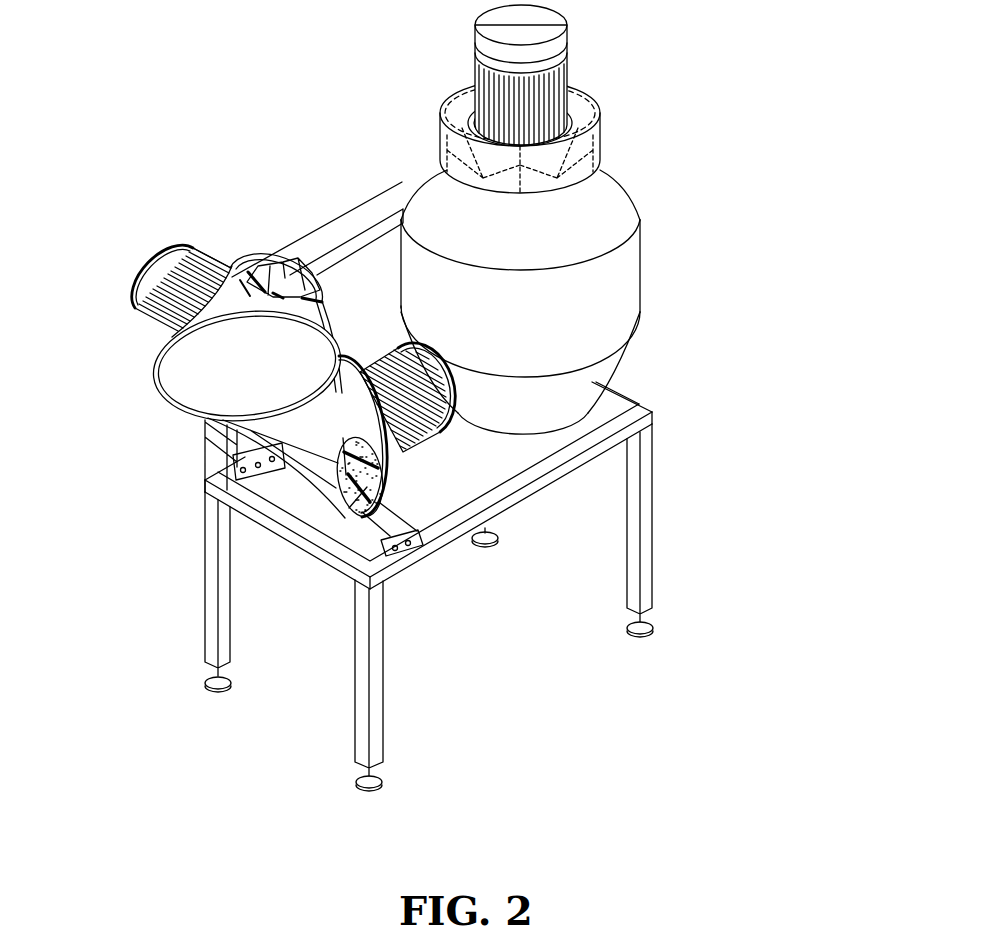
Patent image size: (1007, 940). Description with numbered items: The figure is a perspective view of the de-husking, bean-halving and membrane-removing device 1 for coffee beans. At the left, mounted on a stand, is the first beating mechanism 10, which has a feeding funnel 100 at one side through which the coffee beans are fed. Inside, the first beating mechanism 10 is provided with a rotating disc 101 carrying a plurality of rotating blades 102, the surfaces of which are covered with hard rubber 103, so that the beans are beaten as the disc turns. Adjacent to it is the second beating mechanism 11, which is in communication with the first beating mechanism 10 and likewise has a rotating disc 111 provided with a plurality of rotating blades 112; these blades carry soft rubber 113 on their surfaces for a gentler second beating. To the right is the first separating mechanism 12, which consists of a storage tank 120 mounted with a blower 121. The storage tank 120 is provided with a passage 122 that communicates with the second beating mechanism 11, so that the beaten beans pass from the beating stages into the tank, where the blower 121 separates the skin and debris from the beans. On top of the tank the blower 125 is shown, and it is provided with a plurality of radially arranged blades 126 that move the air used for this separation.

The de-husking, bean-halving and membrane-removing device 1 is at (815, 393).
The first beating mechanism 10 is at (315, 518).
The second beating mechanism 11 is at (117, 240).
The first separating mechanism 12 is at (690, 202).
The feeding funnel 100 is at (223, 372).
The rotating disc 101 is at (366, 437).
The rotating blades 102 is at (340, 517).
The hard rubber 103 is at (370, 487).
The rotating disc 111 is at (275, 270).
The rotating blades 112 is at (257, 292).
The soft rubber 113 is at (245, 295).
The storage tank 120 is at (630, 285).
The blower 121 is at (607, 100).
The passage 122 is at (338, 222).
The blower 125 is at (573, 100).
The radially arranged blades 126 is at (597, 143).